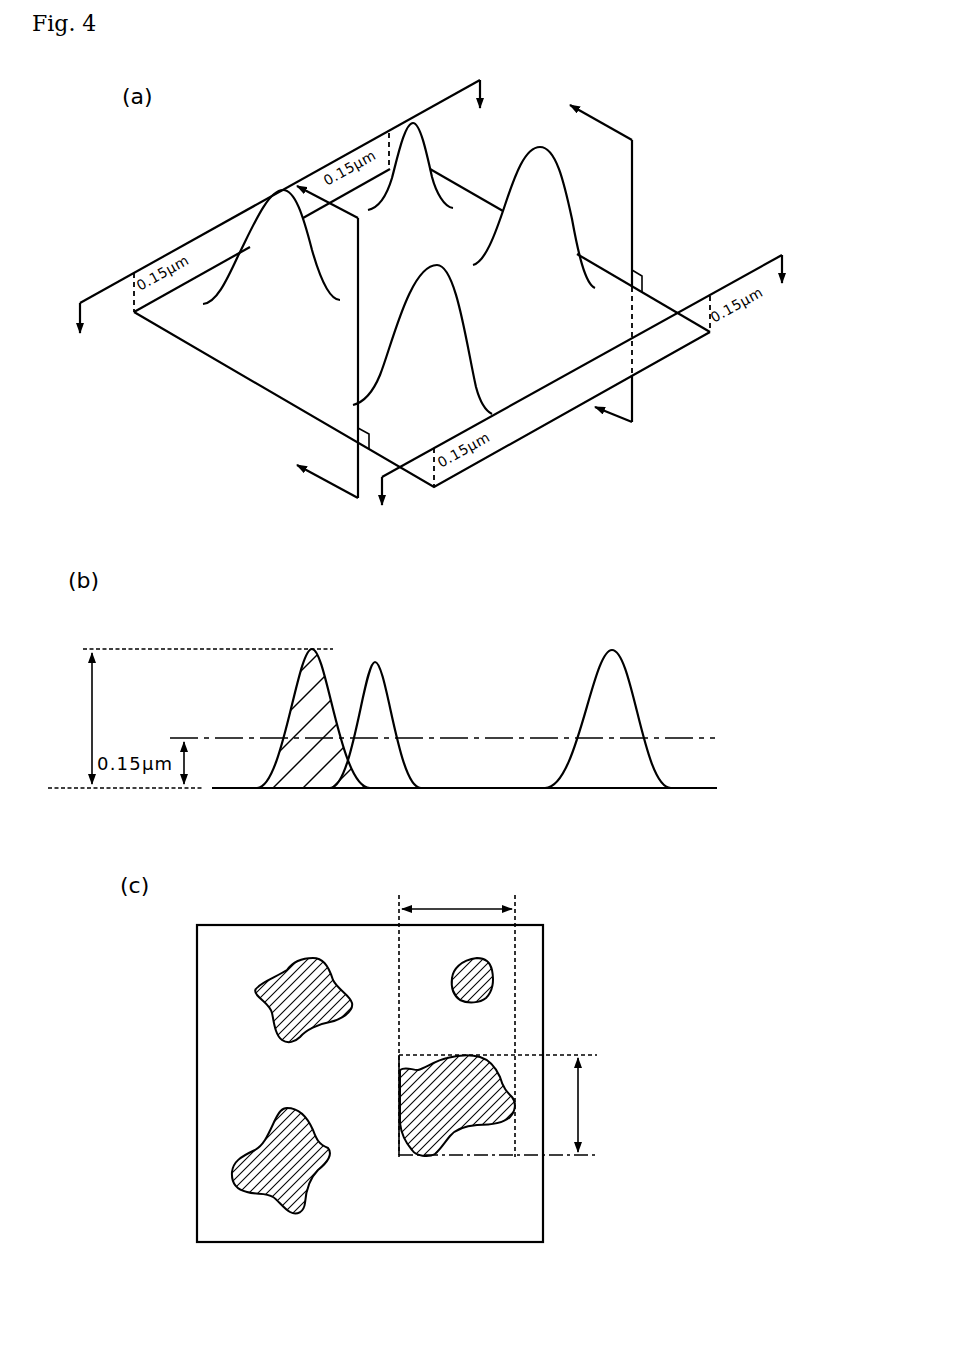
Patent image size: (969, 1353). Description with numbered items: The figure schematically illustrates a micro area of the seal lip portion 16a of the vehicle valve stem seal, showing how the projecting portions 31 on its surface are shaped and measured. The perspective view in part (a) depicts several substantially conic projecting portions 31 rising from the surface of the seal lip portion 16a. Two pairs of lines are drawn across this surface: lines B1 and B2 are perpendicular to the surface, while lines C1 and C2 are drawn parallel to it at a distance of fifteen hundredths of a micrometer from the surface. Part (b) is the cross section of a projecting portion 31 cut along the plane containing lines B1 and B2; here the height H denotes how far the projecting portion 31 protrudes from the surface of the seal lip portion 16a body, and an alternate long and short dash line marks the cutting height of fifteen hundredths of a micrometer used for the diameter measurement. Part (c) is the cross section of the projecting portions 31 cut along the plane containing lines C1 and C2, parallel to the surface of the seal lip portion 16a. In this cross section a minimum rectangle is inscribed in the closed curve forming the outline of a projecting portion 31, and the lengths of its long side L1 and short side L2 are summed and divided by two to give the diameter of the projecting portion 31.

The seal lip portion 16a is at (505, 127).
The projecting portion 31 is at (428, 288).
The line C1 is at (280, 195).
The line C2 is at (580, 369).
The line B1 is at (339, 355).
The line B2 is at (612, 273).
The height of the projecting portion H is at (103, 718).
The long side L1 is at (457, 1021).
The short side L2 is at (501, 1105).